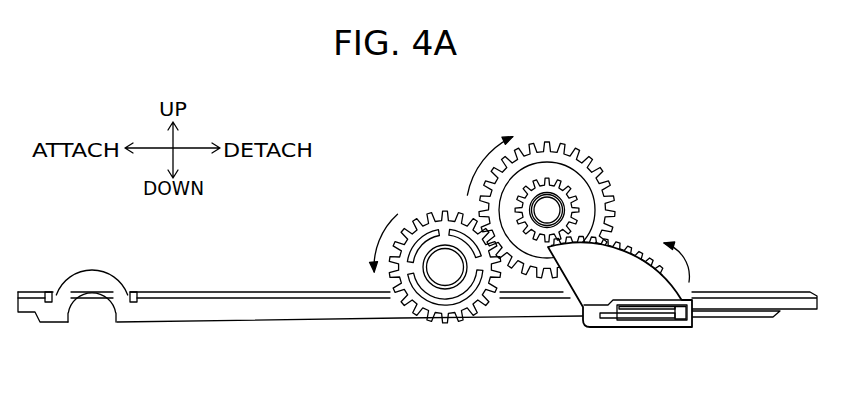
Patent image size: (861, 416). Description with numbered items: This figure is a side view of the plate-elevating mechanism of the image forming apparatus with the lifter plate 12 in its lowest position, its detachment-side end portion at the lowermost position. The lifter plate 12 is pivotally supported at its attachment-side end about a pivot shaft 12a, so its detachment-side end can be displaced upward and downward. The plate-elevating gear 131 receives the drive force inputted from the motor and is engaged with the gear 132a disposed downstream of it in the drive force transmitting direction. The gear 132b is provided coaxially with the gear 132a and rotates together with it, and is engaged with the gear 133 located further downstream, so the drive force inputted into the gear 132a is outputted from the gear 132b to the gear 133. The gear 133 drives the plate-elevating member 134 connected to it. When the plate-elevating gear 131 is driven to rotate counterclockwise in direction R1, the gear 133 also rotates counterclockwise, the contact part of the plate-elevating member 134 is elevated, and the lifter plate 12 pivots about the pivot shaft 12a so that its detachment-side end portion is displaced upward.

The lifter plate 12 is at (763, 289).
The pivot shaft 12a is at (88, 305).
The plate-elevating gear 131 is at (420, 213).
The gear 132a is at (545, 143).
The gear 132b is at (572, 195).
The gear 133 is at (637, 230).
The plate-elevating member 134 is at (730, 317).
The counterclockwise rotation direction R1 is at (378, 232).